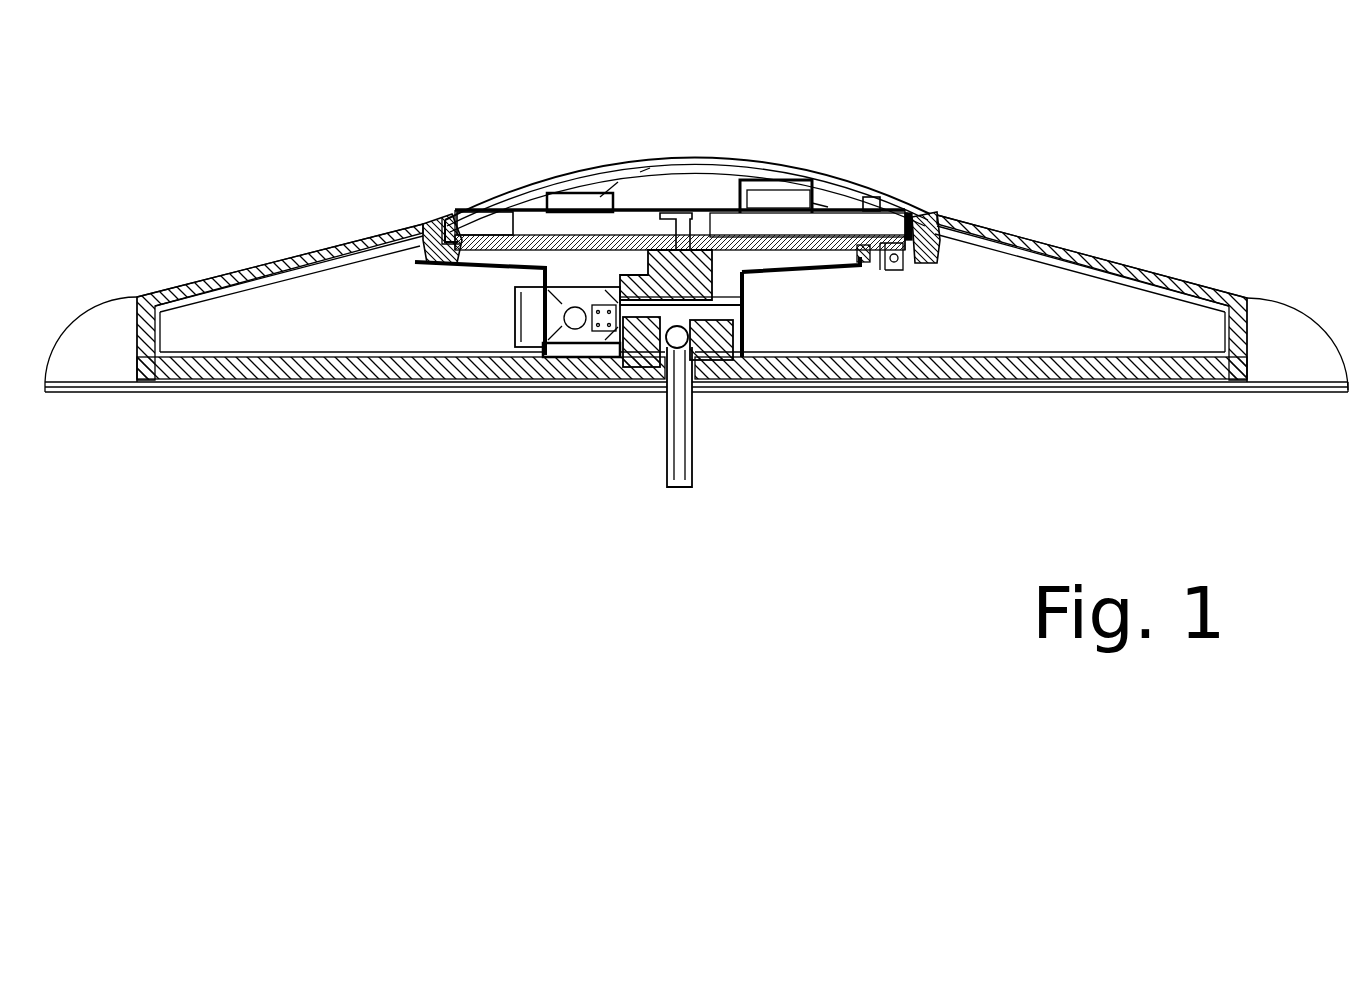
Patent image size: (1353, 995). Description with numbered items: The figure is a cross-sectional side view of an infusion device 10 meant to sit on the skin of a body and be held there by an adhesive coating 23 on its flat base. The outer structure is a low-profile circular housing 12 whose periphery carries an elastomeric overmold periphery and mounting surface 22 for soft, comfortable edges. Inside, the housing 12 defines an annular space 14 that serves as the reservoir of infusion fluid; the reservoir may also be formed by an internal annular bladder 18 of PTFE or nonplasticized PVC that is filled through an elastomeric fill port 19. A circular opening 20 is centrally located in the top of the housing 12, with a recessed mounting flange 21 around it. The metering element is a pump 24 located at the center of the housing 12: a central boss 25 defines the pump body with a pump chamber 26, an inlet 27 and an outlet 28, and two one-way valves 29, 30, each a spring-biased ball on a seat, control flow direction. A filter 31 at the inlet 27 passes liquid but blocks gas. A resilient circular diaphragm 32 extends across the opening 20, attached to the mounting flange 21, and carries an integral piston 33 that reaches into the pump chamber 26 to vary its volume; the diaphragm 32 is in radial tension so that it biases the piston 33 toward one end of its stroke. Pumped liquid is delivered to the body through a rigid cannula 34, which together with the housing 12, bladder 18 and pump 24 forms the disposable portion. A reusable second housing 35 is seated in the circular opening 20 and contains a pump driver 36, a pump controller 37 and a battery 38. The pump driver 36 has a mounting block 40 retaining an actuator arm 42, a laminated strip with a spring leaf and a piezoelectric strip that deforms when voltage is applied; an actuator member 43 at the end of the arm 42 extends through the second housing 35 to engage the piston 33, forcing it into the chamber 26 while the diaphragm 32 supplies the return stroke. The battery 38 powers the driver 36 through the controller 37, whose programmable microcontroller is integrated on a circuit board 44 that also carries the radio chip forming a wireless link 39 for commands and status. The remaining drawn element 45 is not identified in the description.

The infusion device 10 is at (1072, 250).
The housing 12 is at (1133, 275).
The annular space 14 is at (598, 380).
The internal annular bladder 18 is at (482, 272).
The elastomeric fill port 19 is at (908, 270).
The circular opening 20 is at (920, 212).
The recessed mounting flange 21 is at (425, 266).
The elastomeric overmold periphery and mounting surface 22 is at (1270, 347).
The adhesive coating 23 is at (1269, 392).
The pump 24 is at (753, 318).
The central boss 25 is at (748, 346).
The pump chamber 26 is at (640, 383).
The inlet 27 is at (497, 386).
The outlet 28 is at (747, 300).
The one-way valve 29 is at (573, 373).
The one-way valve 30 is at (707, 377).
The filter 31 is at (513, 318).
The circular diaphragm 32 is at (597, 245).
The piston 33 is at (728, 205).
The rigid cannula 34 is at (692, 440).
The second housing 35 is at (820, 207).
The pump driver 36 is at (482, 192).
The pump controller 37 is at (646, 172).
The battery 38 is at (830, 220).
The wireless link 39 is at (778, 212).
The mounting block 40 is at (462, 200).
The actuator arm 42 is at (610, 197).
The actuator member 43 is at (680, 238).
The circuit board 44 is at (523, 198).
The electronic component 45 is at (572, 205).